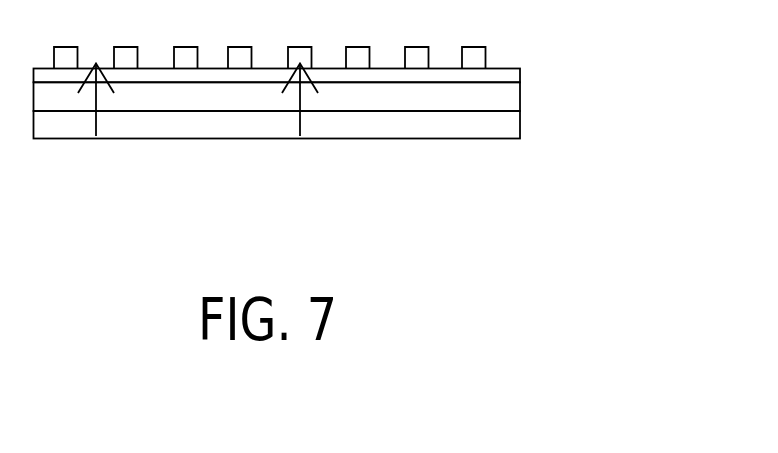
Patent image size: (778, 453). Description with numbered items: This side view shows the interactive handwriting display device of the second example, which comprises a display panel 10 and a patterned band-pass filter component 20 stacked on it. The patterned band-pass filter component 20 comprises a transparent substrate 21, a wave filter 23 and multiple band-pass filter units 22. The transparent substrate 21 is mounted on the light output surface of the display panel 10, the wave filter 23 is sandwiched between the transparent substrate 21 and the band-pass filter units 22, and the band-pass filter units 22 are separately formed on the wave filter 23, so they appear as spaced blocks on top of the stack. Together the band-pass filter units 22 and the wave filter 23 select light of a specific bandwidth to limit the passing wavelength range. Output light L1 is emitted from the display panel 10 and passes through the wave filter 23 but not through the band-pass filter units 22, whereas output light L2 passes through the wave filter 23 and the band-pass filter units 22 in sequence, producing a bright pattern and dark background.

The display panel 10 is at (497, 130).
The patterned band-pass filter component 20 is at (345, 57).
The transparent substrate 21 is at (497, 100).
The band-pass filter units 22 is at (482, 48).
The wave filter 23 is at (502, 78).
The output light of the specific area L1 is at (96, 122).
The output light of the remaining area L2 is at (300, 122).